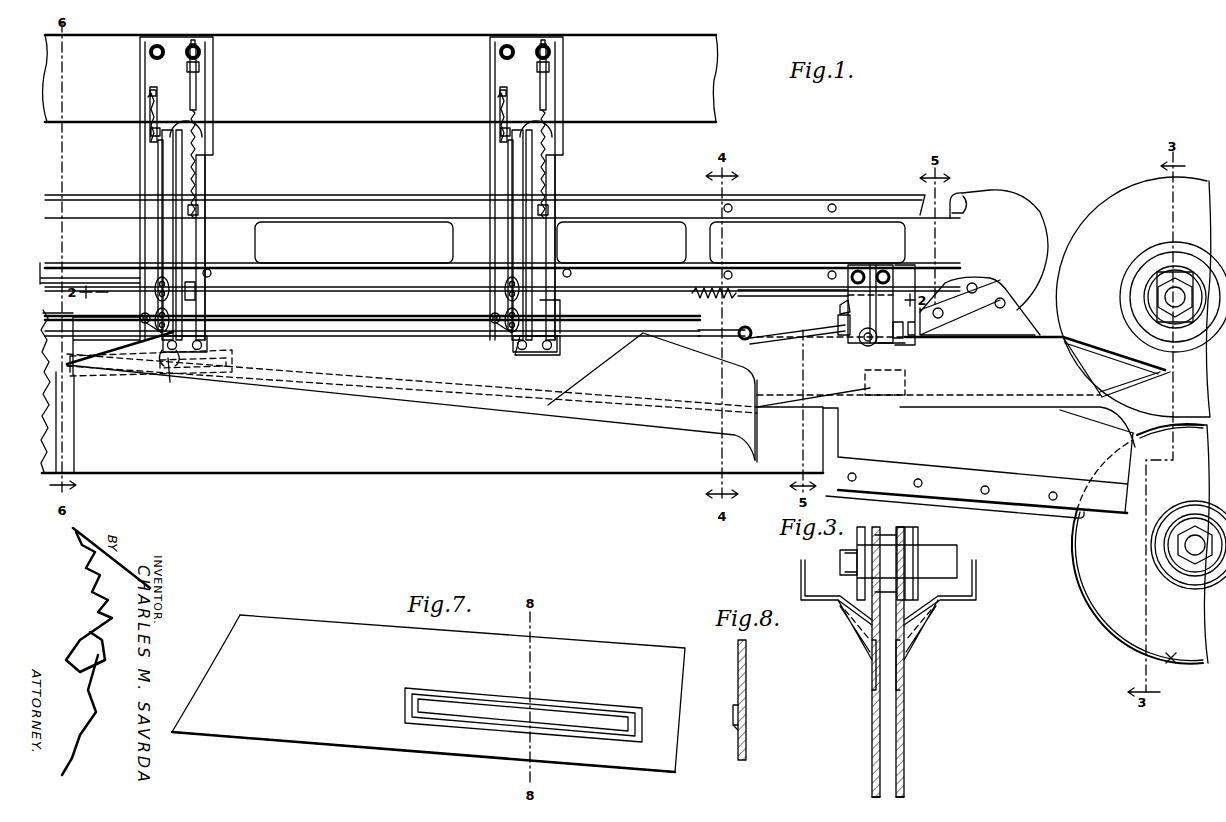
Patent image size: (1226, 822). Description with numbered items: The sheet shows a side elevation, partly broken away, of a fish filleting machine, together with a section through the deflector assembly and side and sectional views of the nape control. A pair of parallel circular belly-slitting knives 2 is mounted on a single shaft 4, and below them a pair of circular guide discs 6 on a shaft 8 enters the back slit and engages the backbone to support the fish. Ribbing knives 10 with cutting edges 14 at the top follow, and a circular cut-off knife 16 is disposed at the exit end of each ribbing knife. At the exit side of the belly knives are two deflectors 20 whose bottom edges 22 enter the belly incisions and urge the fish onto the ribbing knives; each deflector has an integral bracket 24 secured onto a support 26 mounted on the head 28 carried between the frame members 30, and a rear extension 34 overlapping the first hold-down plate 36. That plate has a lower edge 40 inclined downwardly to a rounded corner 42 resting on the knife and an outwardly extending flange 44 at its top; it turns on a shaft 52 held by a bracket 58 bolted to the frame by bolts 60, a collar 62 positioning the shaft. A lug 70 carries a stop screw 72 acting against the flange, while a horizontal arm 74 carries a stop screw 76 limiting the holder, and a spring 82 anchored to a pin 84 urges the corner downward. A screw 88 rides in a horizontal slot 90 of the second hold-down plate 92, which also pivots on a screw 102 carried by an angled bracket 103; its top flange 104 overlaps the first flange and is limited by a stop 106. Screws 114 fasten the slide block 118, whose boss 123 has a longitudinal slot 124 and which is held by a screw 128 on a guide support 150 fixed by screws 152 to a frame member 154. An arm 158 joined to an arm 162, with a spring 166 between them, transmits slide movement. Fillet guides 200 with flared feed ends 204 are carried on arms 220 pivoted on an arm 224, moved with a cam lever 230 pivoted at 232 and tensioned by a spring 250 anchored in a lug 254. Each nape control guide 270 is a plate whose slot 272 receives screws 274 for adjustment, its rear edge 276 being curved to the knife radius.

In FIG. 1, the belly-slitting knives 2 is at (1120, 195).
In FIG. 3, the belly-slitting knives 2 is at (897, 533).
In FIG. 1, the shaft 4 is at (1165, 296).
In FIG. 3, the shaft 4 is at (840, 560).
In FIG. 1, the guide discs 6 is at (1168, 658).
In FIG. 3, the guide discs 6 is at (872, 790).
In FIG. 1, the shaft 8 is at (1190, 556).
In FIG. 1, the ribbing knives 10 is at (768, 462).
In FIG. 3, the ribbing knives 10 is at (872, 724).
In FIG. 1, the cutting edges 14 is at (792, 410).
In FIG. 1, the cut-off knife 16 is at (73, 320).
In FIG. 1, the deflectors 20 is at (963, 367).
In FIG. 3, the deflectors 20 is at (862, 652).
In FIG. 1, the bottom edges 22 is at (958, 398).
In FIG. 3, the bottom edges 22 is at (870, 670).
In FIG. 1, the bracket 24 is at (1015, 311).
In FIG. 3, the bracket 24 is at (800, 568).
In FIG. 1, the support 26 is at (990, 280).
In FIG. 1, the head 28 is at (1030, 222).
In FIG. 1, the frame members 30 is at (658, 192).
In FIG. 1, the extension 34 is at (885, 382).
In FIG. 1, the hold-down plate 36 is at (838, 362).
In FIG. 1, the lower edge 40 is at (838, 412).
In FIG. 1, the rounded corner 42 is at (746, 408).
In FIG. 1, the flange 44 is at (832, 332).
In FIG. 1, the shaft 52 is at (872, 348).
In FIG. 1, the bracket 58 is at (870, 304).
In FIG. 1, the bolts 60 is at (882, 270).
In FIG. 1, the collar 62 is at (862, 344).
In FIG. 1, the lug 70 is at (836, 318).
In FIG. 1, the stop screw 72 is at (842, 306).
In FIG. 1, the horizontal arm 74 is at (896, 338).
In FIG. 1, the stop screw 76 is at (905, 305).
In FIG. 1, the spring 82 is at (793, 299).
In FIG. 1, the pin 84 is at (703, 298).
In FIG. 1, the screw 88 is at (752, 334).
In FIG. 1, the horizontal slot 90 is at (716, 318).
In FIG. 1, the hold-down plate 92 is at (670, 342).
In FIG. 1, the screw 102 is at (562, 348).
In FIG. 1, the bracket 103 is at (562, 302).
In FIG. 1, the flange 104 is at (372, 309).
In FIG. 1, the stop 106 is at (560, 314).
In FIG. 1, the screws 114 is at (140, 325).
In FIG. 1, the slide block 118 is at (140, 318).
In FIG. 1, the boss 123 is at (154, 294).
In FIG. 1, the longitudinal slot 124 is at (196, 292).
In FIG. 1, the screw 128 is at (169, 320).
In FIG. 1, the guide support 150 is at (213, 97).
In FIG. 1, the screws 152 is at (188, 58).
In FIG. 1, the frame member 154 is at (716, 58).
In FIG. 1, the arm 158 is at (160, 163).
In FIG. 1, the arm 162 is at (151, 122).
In FIG. 1, the spring 166 is at (146, 106).
In FIG. 1, the fillet guides 200 is at (432, 390).
In FIG. 1, the flared feed end 204 is at (656, 424).
In FIG. 1, the arms 220 is at (198, 244).
In FIG. 1, the arm 224 is at (200, 148).
In FIG. 1, the cam lever 230 is at (158, 216).
In FIG. 1, the pivot 232 is at (200, 212).
In FIG. 1, the spring 250 is at (195, 166).
In FIG. 1, the lug 254 is at (188, 76).
In FIG. 1, the nape control guide 270 is at (80, 372).
In FIG. 7, the nape control guide 270 is at (316, 633).
In FIG. 1, the slot 272 is at (212, 378).
In FIG. 7, the slot 272 is at (475, 704).
In FIG. 8, the slot 272 is at (742, 712).
In FIG. 1, the screws 274 is at (190, 372).
In FIG. 1, the rear edge 276 is at (66, 396).
In FIG. 7, the rear edge 276 is at (218, 668).
In FIG. 8, the rear edge 276 is at (748, 680).